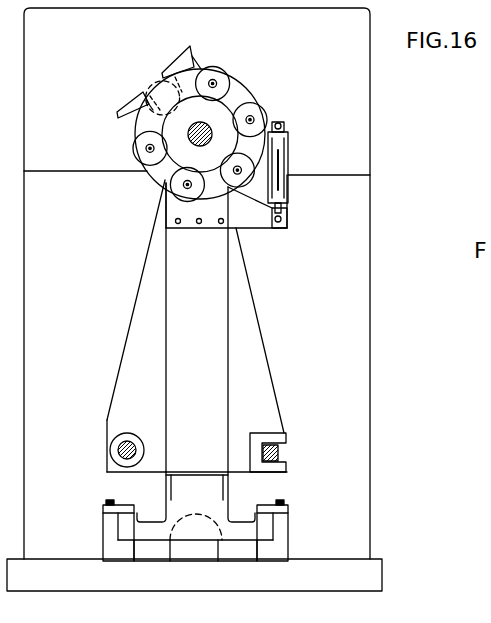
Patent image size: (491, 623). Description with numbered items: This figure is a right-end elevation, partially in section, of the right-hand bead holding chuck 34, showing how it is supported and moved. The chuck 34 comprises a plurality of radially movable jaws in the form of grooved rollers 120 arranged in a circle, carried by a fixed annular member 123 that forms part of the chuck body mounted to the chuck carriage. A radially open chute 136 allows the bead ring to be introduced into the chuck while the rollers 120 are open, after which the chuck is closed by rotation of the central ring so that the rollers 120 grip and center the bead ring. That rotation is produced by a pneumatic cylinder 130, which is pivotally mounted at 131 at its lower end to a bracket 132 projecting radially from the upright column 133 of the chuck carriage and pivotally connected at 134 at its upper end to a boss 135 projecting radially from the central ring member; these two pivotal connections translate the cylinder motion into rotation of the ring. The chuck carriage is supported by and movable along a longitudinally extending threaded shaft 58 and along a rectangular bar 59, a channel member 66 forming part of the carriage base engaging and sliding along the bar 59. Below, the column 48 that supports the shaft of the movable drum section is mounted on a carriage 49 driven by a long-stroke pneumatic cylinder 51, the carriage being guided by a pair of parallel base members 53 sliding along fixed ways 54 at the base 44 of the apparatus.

The radially open chute 136 is at (196, 57).
The grooved rollers 120 is at (254, 96).
The boss 135 is at (281, 119).
The pivotal connection 134 is at (282, 126).
The pneumatic cylinder 130 is at (289, 155).
The pivotal mounting 131 is at (285, 219).
The bracket 132 is at (265, 222).
The bead ring chuck 34 is at (150, 179).
The fixed annular member 123 is at (160, 187).
The upright column 133 is at (165, 240).
The column 48 is at (222, 315).
The threaded shaft 58 is at (110, 448).
The channel member 66 is at (276, 437).
The rectangular bar 59 is at (279, 455).
The carriage 49 is at (224, 500).
The base member 53 is at (125, 523).
The fixed way 54 is at (117, 548).
The long-stroke pneumatic cylinder 51 is at (188, 548).
The base 44 is at (222, 590).